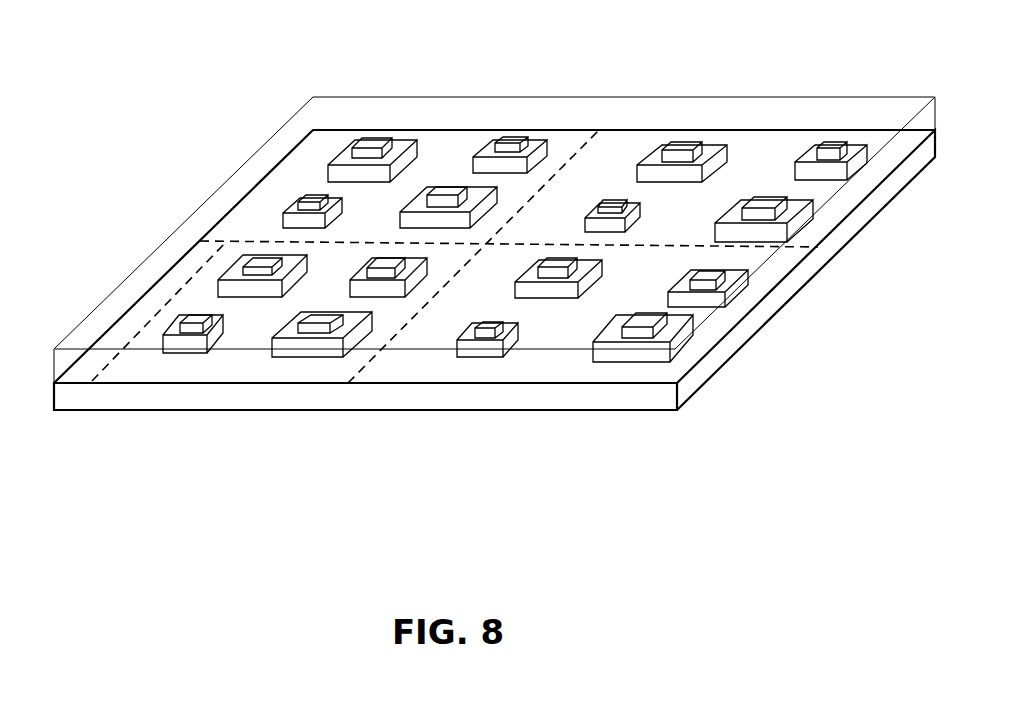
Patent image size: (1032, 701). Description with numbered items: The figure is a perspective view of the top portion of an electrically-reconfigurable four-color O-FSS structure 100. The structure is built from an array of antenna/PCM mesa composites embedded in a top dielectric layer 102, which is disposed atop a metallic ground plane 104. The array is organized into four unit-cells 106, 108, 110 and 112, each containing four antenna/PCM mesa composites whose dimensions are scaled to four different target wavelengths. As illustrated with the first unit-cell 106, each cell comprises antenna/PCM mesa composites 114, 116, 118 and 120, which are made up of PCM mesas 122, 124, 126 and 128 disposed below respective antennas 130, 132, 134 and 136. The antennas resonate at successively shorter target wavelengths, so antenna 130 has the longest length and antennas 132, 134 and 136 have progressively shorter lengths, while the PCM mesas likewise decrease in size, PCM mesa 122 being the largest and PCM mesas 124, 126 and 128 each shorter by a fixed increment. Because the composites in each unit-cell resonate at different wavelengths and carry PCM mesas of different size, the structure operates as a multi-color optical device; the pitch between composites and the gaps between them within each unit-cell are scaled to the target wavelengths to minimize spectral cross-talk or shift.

The O-FSS structure 100 is at (474, 258).
The top dielectric layer 102 is at (494, 237).
The metallic ground plane 104 is at (494, 318).
The unit-cell 106 is at (590, 395).
The unit-cell 108 is at (479, 197).
The unit-cell 110 is at (800, 147).
The unit-cell 112 is at (720, 318).
The antenna/PCM mesa composite 114 is at (293, 407).
The antenna/PCM mesa composite 116 is at (240, 282).
The antenna/PCM mesa composite 118 is at (400, 285).
The antenna/PCM mesa composite 120 is at (118, 366).
The PCM mesa 122 is at (332, 347).
The PCM mesa 124 is at (190, 209).
The PCM mesa 126 is at (418, 377).
The PCM mesa 128 is at (167, 342).
The antenna 130 is at (317, 320).
The antenna 132 is at (262, 262).
The antenna 134 is at (388, 266).
The antenna 136 is at (195, 325).